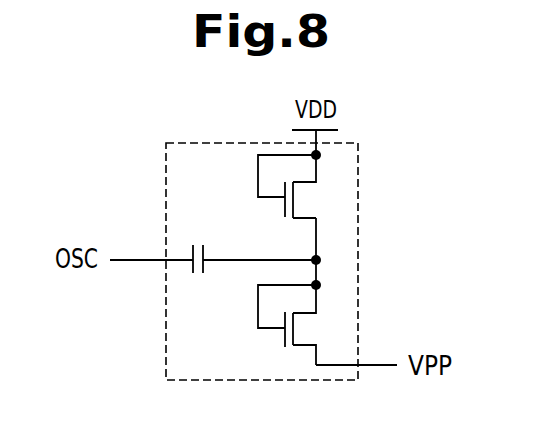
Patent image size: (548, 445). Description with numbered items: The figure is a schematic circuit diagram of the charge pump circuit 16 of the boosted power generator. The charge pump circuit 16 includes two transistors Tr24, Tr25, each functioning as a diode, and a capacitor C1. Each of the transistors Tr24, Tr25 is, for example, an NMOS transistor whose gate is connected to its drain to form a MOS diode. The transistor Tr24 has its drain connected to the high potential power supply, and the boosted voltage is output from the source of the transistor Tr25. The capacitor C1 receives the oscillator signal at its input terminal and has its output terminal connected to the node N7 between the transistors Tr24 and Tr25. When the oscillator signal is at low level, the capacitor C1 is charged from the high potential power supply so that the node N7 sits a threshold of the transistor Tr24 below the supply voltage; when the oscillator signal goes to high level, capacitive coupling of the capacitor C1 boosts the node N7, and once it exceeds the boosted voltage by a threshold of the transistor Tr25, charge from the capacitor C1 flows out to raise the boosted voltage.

The charge pump circuit 16 is at (166, 345).
The capacitor C1 is at (191, 273).
The node N7 is at (298, 251).
The transistor Tr24 is at (283, 207).
The transistor Tr25 is at (283, 338).